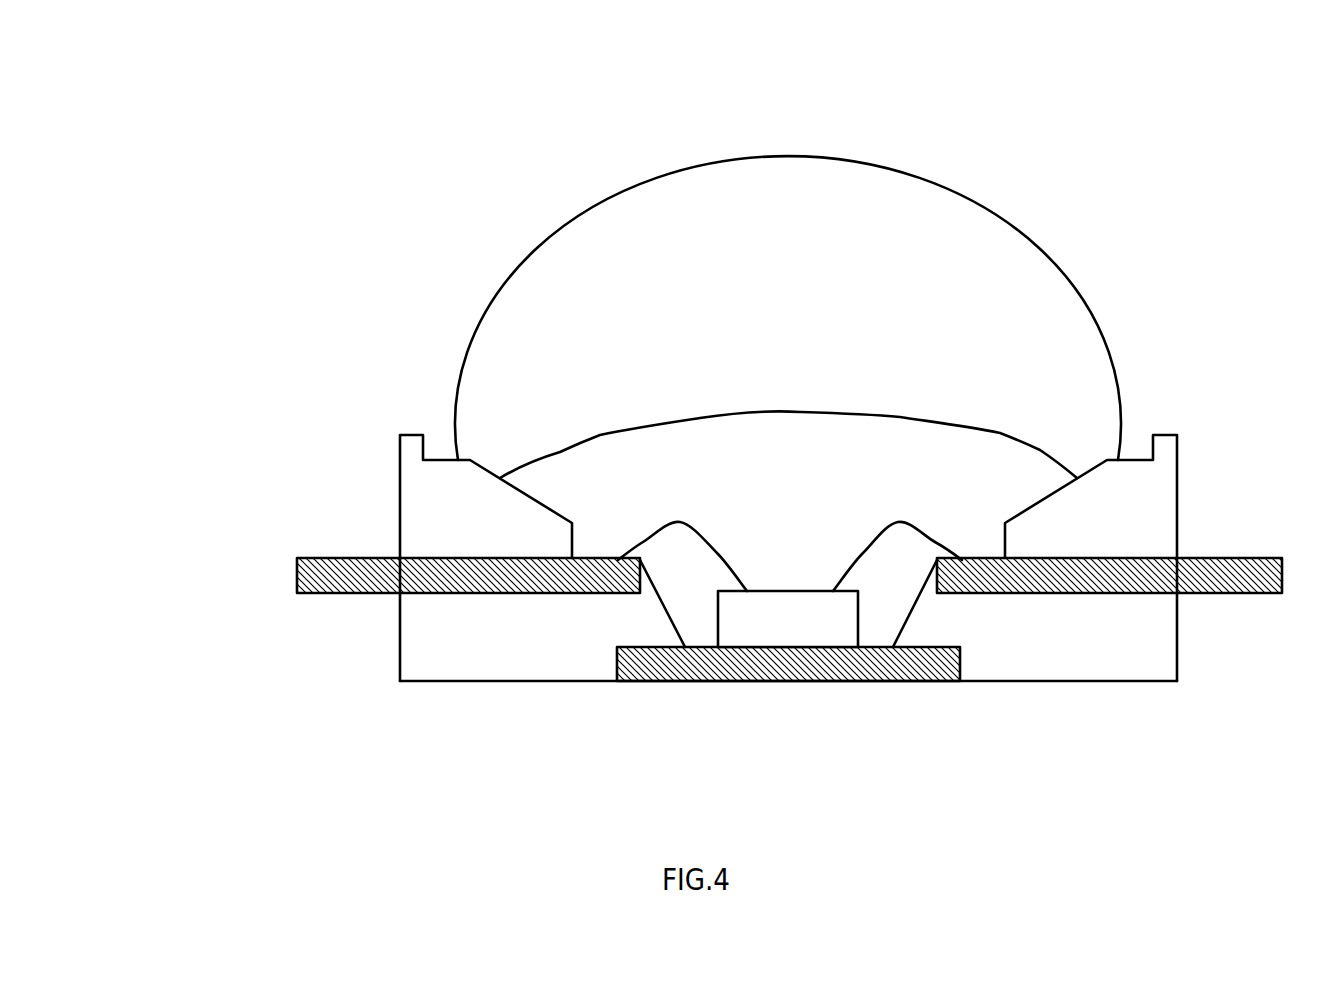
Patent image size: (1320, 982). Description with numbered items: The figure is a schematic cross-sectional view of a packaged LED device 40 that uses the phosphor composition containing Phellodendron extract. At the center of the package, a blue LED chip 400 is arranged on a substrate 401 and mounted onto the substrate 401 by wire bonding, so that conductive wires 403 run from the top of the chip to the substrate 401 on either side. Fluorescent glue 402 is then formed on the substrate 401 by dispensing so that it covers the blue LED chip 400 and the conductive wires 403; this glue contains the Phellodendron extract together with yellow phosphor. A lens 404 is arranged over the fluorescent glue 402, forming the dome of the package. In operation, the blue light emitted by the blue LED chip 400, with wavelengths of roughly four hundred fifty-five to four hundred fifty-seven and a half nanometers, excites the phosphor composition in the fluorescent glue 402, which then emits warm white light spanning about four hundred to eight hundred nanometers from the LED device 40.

The LED device 40 is at (333, 82).
The blue LED chip 400 is at (790, 625).
The substrate 401 is at (389, 518).
The fluorescent glue 402 is at (790, 443).
The conductive wires 403 is at (938, 538).
The lens 404 is at (530, 347).